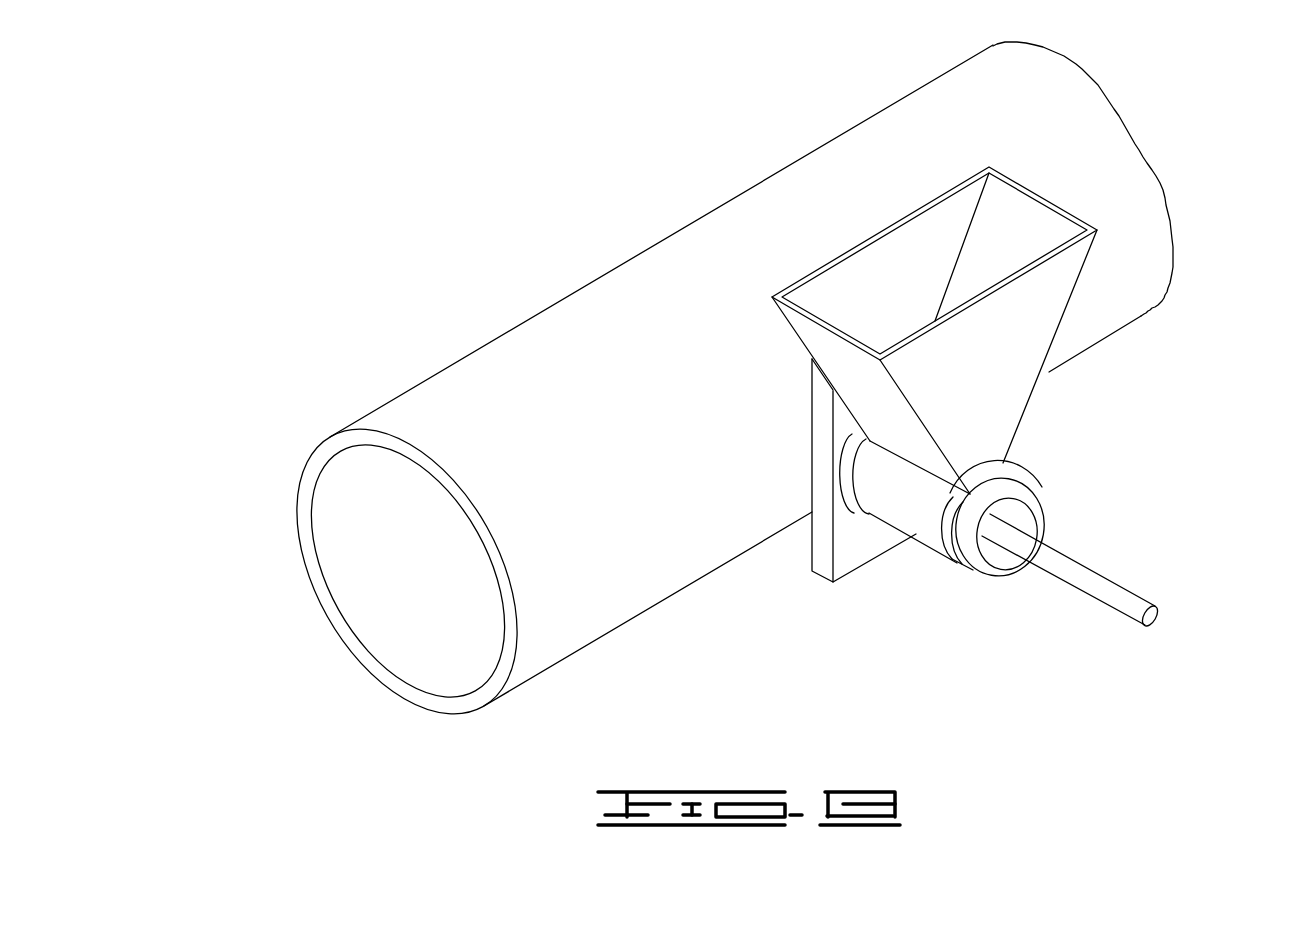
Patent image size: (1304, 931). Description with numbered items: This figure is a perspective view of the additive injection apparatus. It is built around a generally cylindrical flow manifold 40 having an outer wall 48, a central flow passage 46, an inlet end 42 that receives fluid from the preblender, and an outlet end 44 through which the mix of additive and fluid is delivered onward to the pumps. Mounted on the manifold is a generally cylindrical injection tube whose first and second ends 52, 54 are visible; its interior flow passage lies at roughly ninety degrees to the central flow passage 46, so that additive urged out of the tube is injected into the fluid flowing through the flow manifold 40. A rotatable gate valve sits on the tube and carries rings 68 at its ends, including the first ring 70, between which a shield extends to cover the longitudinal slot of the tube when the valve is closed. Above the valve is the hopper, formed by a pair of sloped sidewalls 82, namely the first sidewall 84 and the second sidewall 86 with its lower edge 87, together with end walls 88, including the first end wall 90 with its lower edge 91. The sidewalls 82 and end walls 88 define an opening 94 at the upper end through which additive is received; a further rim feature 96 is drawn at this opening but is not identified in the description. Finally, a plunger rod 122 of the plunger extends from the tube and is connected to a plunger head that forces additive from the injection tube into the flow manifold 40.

The flow manifold 40 is at (387, 405).
The inlet end 42 is at (313, 588).
The outlet end 44 is at (1165, 186).
The central flow passage 46 is at (417, 643).
The outer wall 48 is at (307, 462).
The first end 52 is at (1003, 577).
The second end 54 is at (848, 450).
The rings 68 is at (951, 561).
The first ring 70 is at (850, 512).
The sloped sidewalls 82 is at (998, 248).
The first sidewall 84 is at (962, 247).
The second sidewall 86 is at (814, 340).
The lower edge 87 is at (927, 476).
The end walls 88 is at (1068, 362).
The first end wall 90 is at (1040, 325).
The lower edge 91 is at (1003, 462).
The opening 94 is at (797, 290).
The hopper rim inner edge 96 is at (910, 212).
The plunger rod 122 is at (1165, 593).